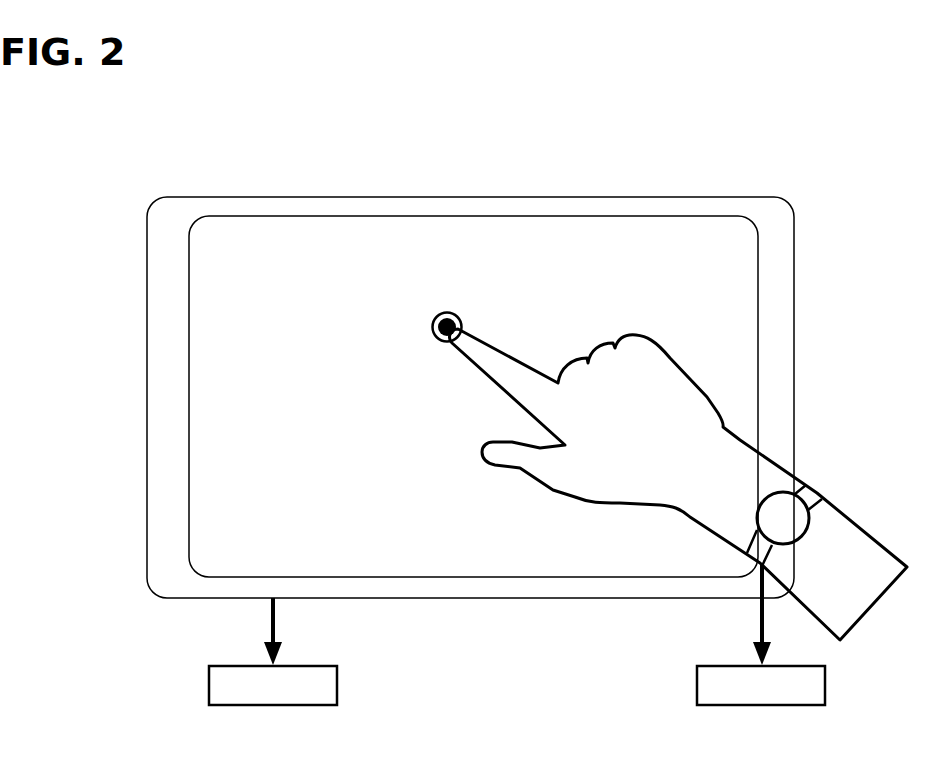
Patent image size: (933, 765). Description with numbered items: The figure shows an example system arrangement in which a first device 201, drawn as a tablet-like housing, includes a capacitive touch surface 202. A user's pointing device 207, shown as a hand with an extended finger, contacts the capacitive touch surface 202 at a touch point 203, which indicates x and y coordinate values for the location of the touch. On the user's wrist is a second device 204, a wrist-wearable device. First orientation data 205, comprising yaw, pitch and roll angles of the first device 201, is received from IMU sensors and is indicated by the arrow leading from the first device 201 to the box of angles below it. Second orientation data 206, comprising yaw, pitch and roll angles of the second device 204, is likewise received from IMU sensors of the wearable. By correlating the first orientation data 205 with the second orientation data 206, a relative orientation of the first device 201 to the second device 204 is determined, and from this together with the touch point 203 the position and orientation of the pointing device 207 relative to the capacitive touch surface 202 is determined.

The first device 201 is at (147, 328).
The capacitive touch surface 202 is at (245, 468).
The touch point 203 is at (435, 320).
The second device 204 is at (812, 487).
The first orientation data 205 is at (209, 703).
The second orientation data 206 is at (697, 703).
The pointing device 207 is at (632, 410).